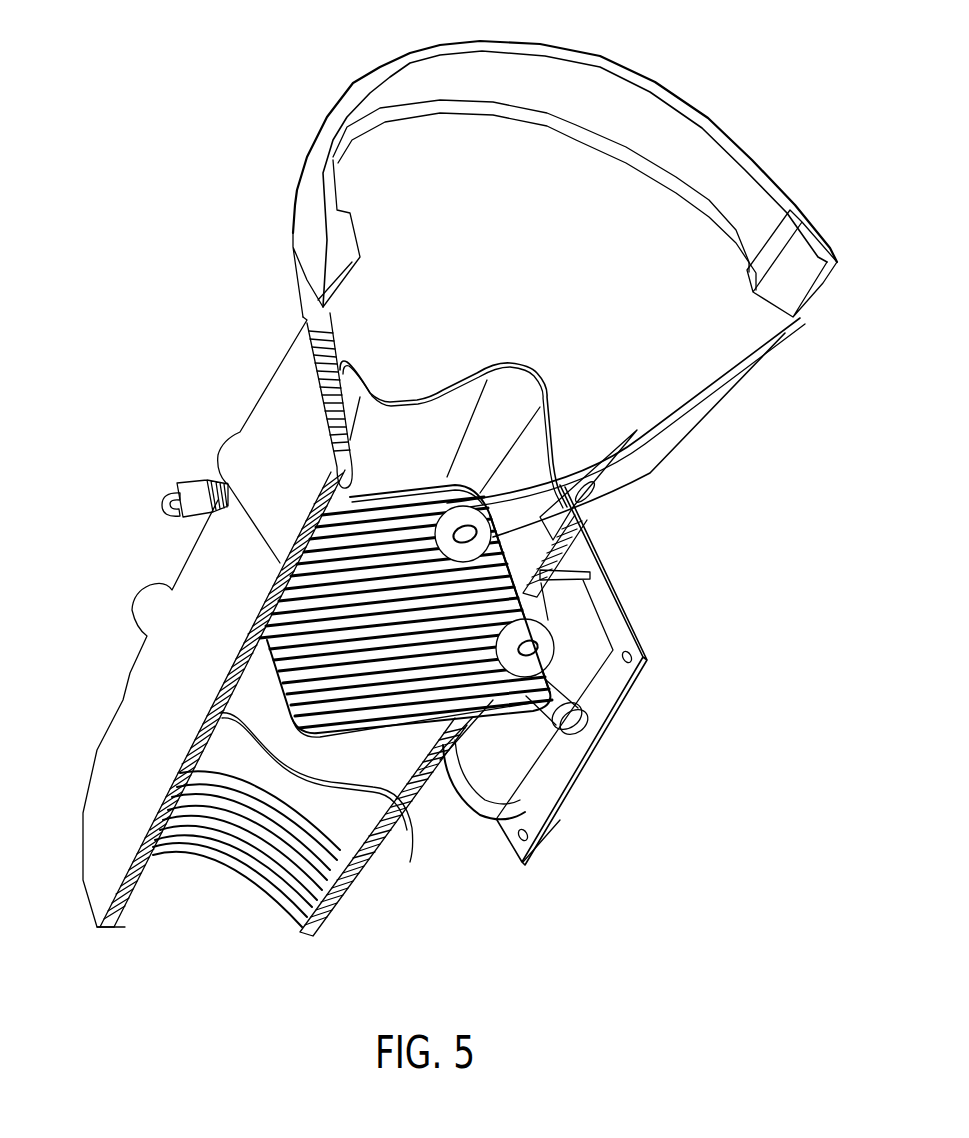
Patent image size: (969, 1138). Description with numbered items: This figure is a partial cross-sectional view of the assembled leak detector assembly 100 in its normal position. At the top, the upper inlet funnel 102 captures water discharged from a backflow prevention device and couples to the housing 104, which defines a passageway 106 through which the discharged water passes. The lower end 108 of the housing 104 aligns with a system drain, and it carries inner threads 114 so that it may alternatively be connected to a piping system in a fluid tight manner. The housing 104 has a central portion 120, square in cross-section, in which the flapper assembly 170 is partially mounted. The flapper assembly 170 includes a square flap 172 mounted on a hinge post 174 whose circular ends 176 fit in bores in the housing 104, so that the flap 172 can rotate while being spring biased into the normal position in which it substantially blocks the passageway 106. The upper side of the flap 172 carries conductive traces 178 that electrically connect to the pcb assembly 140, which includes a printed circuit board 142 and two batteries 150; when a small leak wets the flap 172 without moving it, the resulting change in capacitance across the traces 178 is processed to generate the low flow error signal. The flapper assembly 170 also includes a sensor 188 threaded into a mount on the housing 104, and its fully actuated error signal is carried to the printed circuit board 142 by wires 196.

The leak detector assembly 100 is at (130, 112).
The inlet funnel 102 is at (640, 102).
The housing 104 is at (160, 707).
The passageway 106 is at (196, 908).
The lower end 108 is at (312, 922).
The inner threads 114 is at (277, 877).
The central portion 120 is at (203, 563).
The pcb assembly 140 is at (565, 709).
The printed circuit board 142 is at (527, 857).
The batteries 150 is at (493, 787).
The flapper assembly 170 is at (502, 672).
The flap 172 is at (485, 540).
The hinge post 174 is at (570, 727).
The end of the hinge post 176 is at (567, 698).
The conductive traces 178 is at (660, 417).
The sensor 188 is at (220, 480).
The wires 196 is at (163, 497).